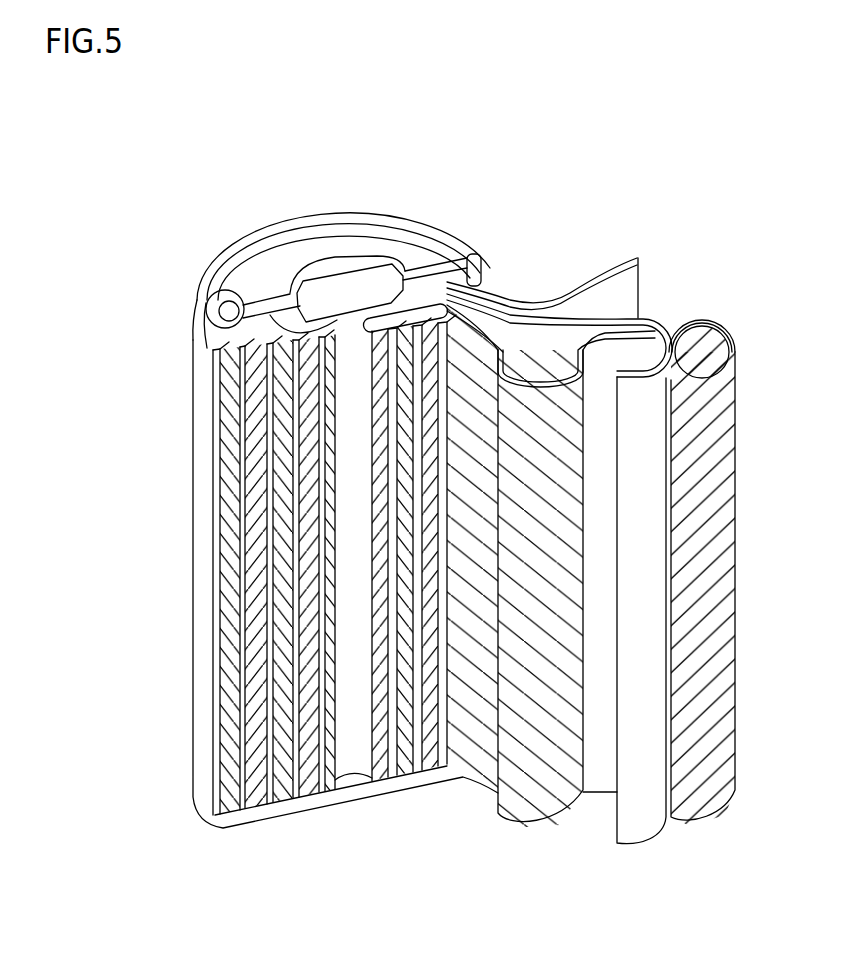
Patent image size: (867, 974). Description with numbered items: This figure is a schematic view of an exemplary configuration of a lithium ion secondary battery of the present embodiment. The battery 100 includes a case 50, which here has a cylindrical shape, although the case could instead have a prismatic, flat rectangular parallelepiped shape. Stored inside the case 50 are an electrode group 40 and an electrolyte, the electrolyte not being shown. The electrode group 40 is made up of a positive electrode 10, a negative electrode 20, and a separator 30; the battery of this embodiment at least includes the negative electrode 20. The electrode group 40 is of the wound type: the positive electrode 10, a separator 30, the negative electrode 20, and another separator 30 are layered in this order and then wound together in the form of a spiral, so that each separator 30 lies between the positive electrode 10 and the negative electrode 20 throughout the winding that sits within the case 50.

The battery 100 is at (147, 127).
The case 50 is at (200, 482).
The electrode group 40 is at (721, 213).
The positive electrode 10 is at (510, 350).
The separator 30 is at (568, 337).
The negative electrode 20 is at (680, 337).